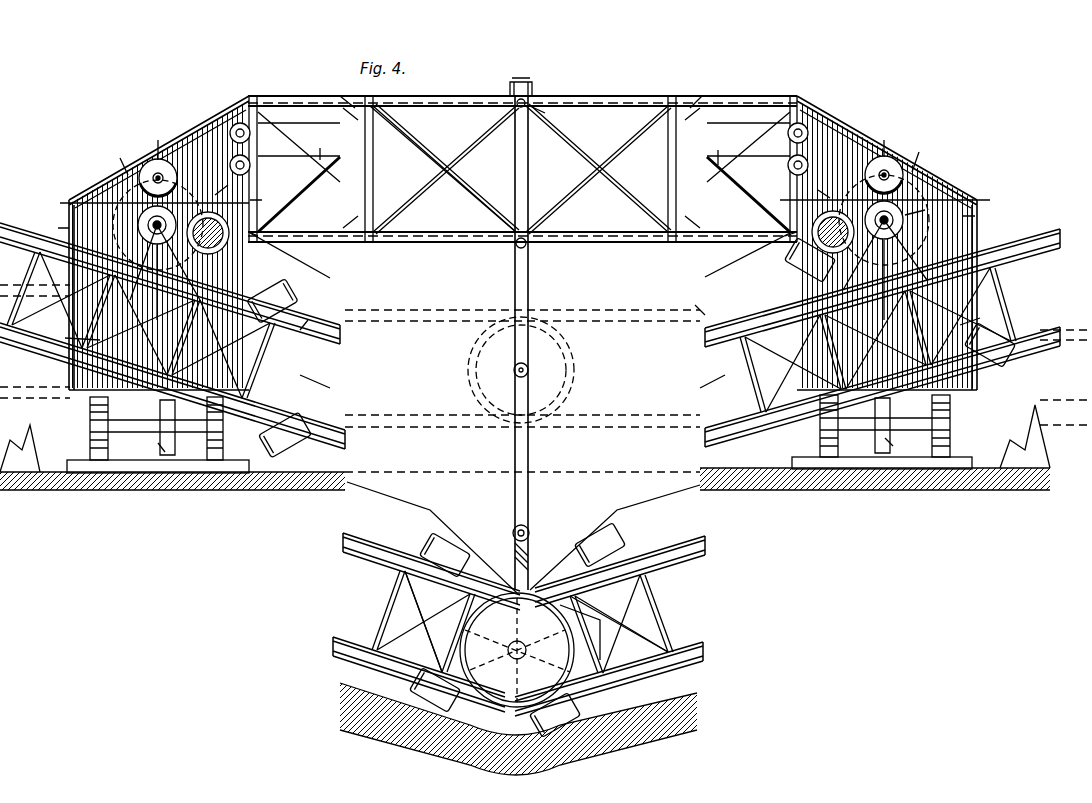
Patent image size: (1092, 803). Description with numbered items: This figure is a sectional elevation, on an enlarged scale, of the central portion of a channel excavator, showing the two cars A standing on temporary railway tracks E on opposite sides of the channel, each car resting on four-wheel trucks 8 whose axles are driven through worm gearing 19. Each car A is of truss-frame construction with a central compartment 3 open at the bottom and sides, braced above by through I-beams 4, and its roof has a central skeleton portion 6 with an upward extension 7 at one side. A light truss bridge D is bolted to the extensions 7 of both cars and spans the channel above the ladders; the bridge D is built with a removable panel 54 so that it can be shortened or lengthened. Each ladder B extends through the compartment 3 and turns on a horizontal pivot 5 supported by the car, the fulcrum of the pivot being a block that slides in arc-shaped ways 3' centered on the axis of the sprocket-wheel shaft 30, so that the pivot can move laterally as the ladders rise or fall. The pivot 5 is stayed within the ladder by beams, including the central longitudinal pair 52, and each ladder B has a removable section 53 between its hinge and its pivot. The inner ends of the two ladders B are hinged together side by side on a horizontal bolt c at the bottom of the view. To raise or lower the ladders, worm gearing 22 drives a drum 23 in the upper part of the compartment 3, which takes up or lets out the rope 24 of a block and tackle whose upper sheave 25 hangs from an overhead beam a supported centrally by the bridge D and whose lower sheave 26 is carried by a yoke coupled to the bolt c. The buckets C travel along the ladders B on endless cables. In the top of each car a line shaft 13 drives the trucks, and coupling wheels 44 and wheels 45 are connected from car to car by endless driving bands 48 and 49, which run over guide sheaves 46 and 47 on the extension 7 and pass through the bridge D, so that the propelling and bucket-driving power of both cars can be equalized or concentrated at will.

The overhead beam a is at (521, 80).
The light truss bridge D is at (522, 169).
The removable panel 54 is at (443, 169).
The sheave 25 is at (543, 115).
The upward extension 7 is at (579, 100).
The car A is at (112, 185).
The central opening or skeleton portion 6 is at (518, 360).
The through I-beams 4 is at (520, 219).
The central compartment 3 is at (510, 220).
The line shaft 13 is at (175, 172).
The coupling wheel 44 is at (524, 141).
The sprocket-wheel shaft 30 is at (150, 224).
The wheel 45 is at (924, 207).
The worm gearing 22 is at (522, 184).
The drum 23 is at (228, 240).
The rope 24 is at (540, 292).
The guide sheave 46 is at (252, 158).
The guide sheave 47 is at (788, 135).
The driving band 48 is at (329, 145).
The driving band 49 is at (714, 148).
The sheave 26 is at (529, 533).
The horizontal bolt c is at (522, 508).
The ladder B is at (546, 469).
The longitudinal beams 52 is at (512, 385).
The ways 3' is at (511, 328).
The horizontal pivot 5 is at (502, 310).
The removable section 53 is at (536, 621).
The bucket C is at (292, 306).
The temporary railway track E is at (155, 458).
The four-wheel truck 8 is at (90, 425).
The worm gearing 19 is at (531, 448).